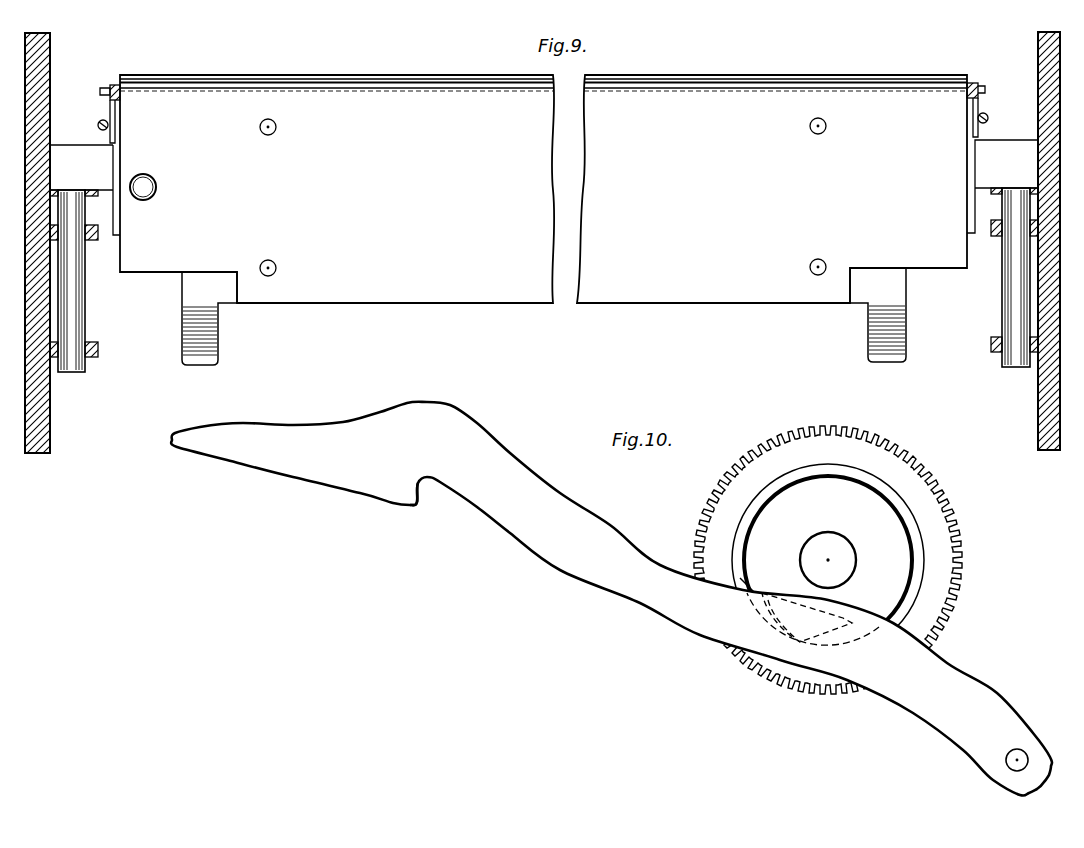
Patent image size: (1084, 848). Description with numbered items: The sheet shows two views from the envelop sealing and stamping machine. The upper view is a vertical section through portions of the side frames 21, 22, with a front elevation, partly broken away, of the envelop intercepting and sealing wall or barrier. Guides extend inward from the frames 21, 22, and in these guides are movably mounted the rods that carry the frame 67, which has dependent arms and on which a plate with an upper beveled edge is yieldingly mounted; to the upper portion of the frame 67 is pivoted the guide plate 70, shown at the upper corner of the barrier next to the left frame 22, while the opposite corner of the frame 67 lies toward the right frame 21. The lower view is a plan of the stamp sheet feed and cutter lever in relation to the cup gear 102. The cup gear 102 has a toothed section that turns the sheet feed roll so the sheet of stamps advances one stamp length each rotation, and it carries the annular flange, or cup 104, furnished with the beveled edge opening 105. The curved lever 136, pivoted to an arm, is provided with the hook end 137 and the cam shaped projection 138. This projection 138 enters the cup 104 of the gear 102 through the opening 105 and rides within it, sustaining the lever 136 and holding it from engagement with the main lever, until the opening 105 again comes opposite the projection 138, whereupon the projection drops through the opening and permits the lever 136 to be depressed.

In FIG. 9, the side frame 21 is at (1038, 412).
In FIG. 9, the side frame 22 is at (50, 432).
In FIG. 9, the frame 67 is at (1000, 140).
In FIG. 9, the guide plate 70 is at (117, 83).
In FIG. 10, the cup gear 102 is at (932, 489).
In FIG. 10, the annular flange, or cup 104 is at (917, 537).
In FIG. 10, the beveled edge opening 105 is at (755, 582).
In FIG. 10, the curved lever 136 is at (946, 670).
In FIG. 10, the hook end 137 is at (420, 479).
In FIG. 10, the cam shaped projection 138 is at (840, 613).